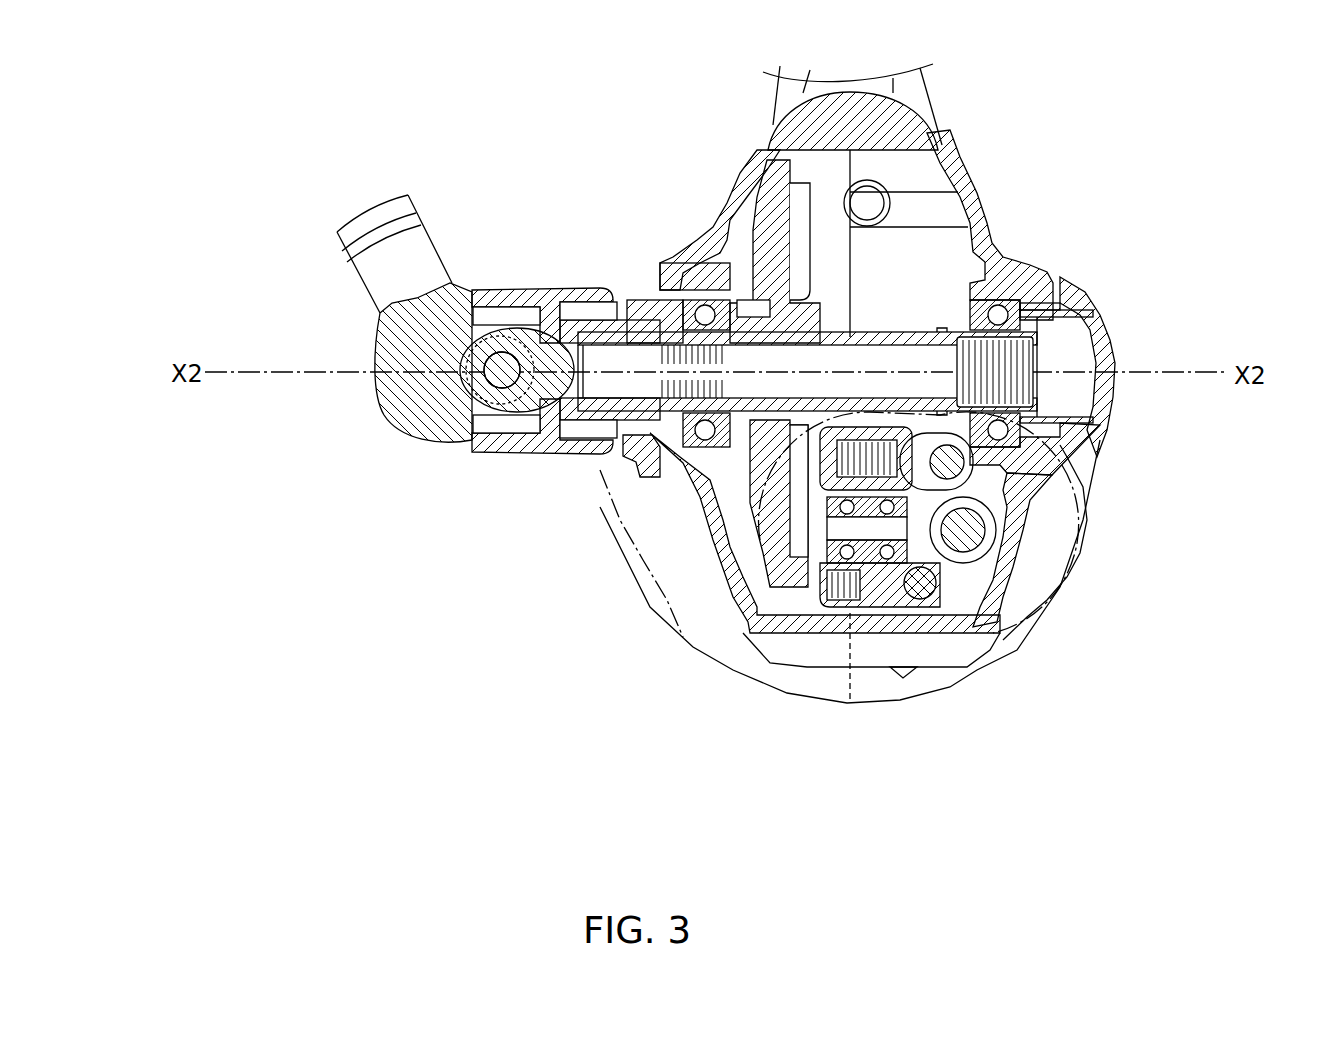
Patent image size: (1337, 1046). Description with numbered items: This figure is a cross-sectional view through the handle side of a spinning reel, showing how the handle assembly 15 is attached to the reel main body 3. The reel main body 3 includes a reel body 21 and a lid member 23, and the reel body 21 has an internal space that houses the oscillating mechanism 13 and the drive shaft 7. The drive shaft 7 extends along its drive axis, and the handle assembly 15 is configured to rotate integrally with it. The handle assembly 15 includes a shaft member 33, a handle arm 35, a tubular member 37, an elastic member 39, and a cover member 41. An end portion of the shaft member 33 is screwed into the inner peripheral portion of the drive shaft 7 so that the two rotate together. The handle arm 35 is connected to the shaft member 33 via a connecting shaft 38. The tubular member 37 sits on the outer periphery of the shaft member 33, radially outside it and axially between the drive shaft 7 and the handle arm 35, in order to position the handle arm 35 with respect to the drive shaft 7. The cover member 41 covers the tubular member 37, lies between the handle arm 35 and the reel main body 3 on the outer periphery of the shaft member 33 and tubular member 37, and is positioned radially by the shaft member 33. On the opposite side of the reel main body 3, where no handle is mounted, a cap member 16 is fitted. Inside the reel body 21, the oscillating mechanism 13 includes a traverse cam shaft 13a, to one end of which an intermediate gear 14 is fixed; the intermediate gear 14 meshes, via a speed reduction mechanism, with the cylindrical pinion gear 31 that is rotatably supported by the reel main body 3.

The reel main body 3 is at (937, 88).
The reel body 21 is at (940, 137).
The lid member 23 is at (727, 172).
The drive shaft 7 is at (917, 330).
The cap member 16 is at (1100, 315).
The cover member 41 is at (528, 284).
The tubular member 37 is at (593, 318).
The elastic member 39 is at (597, 424).
The shaft member 33 is at (527, 420).
The handle arm 35 is at (350, 297).
The handle assembly 15 is at (395, 443).
The connecting shaft 38 is at (462, 388).
The intermediate gear 14 is at (1050, 520).
The oscillating mechanism 13 is at (961, 580).
The traverse cam shaft 13a is at (995, 548).
The pinion gear 31 is at (800, 473).